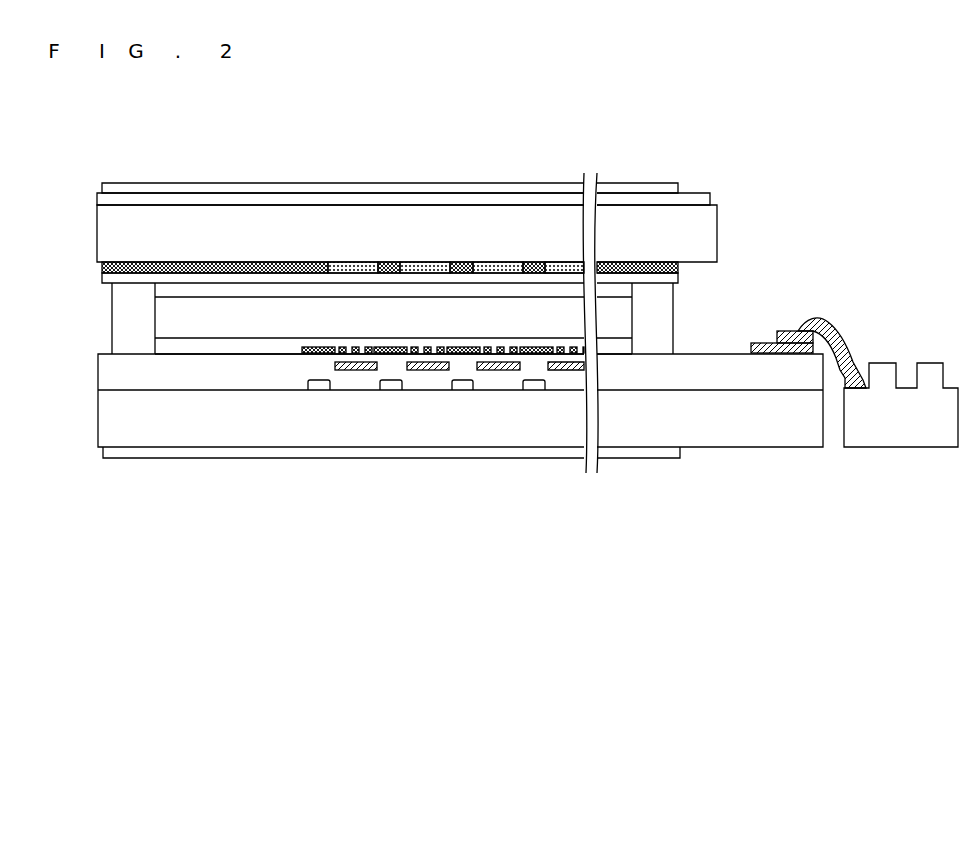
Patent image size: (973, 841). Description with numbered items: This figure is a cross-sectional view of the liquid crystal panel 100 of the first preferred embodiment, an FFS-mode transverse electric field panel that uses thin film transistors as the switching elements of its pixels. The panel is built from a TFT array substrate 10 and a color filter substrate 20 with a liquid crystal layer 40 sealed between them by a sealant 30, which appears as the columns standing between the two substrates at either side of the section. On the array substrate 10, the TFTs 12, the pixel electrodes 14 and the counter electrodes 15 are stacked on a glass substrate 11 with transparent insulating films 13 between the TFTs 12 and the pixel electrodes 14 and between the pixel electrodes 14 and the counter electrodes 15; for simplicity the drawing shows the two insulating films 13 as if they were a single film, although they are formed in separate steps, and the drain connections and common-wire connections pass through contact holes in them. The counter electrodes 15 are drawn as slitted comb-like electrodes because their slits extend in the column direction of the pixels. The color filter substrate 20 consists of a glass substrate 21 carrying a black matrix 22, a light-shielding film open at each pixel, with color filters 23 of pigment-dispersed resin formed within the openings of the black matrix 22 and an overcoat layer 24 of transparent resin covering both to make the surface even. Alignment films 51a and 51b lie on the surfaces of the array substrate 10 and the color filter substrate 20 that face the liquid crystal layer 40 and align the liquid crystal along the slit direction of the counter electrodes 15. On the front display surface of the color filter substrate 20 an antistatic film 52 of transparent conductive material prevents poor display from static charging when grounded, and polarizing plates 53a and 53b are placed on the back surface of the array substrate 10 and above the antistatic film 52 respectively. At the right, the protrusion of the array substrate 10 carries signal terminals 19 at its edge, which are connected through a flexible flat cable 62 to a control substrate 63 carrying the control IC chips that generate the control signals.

The liquid crystal panel 100 is at (764, 195).
The TFT array substrate 10 is at (90, 355).
The glass substrate 11 is at (518, 430).
The TFT 12 is at (465, 388).
The insulating film 13 is at (293, 368).
The pixel electrode 14 is at (430, 370).
The counter electrode 15 is at (398, 353).
The signal terminal 19 is at (766, 340).
The color filter substrate 20 is at (90, 205).
The glass substrate 21 is at (513, 218).
The black matrix 22 is at (457, 263).
The color filter 23 is at (422, 263).
The overcoat layer 24 is at (353, 277).
The sealant 30 is at (123, 308).
The liquid crystal layer 40 is at (168, 322).
The alignment film 51a is at (252, 343).
The alignment film 51b is at (247, 290).
The antistatic film 52 is at (121, 197).
The polarizing plate 53a is at (175, 458).
The polarizing plate 53b is at (168, 188).
The flexible flat cable 62 is at (817, 317).
The control substrate 63 is at (884, 372).